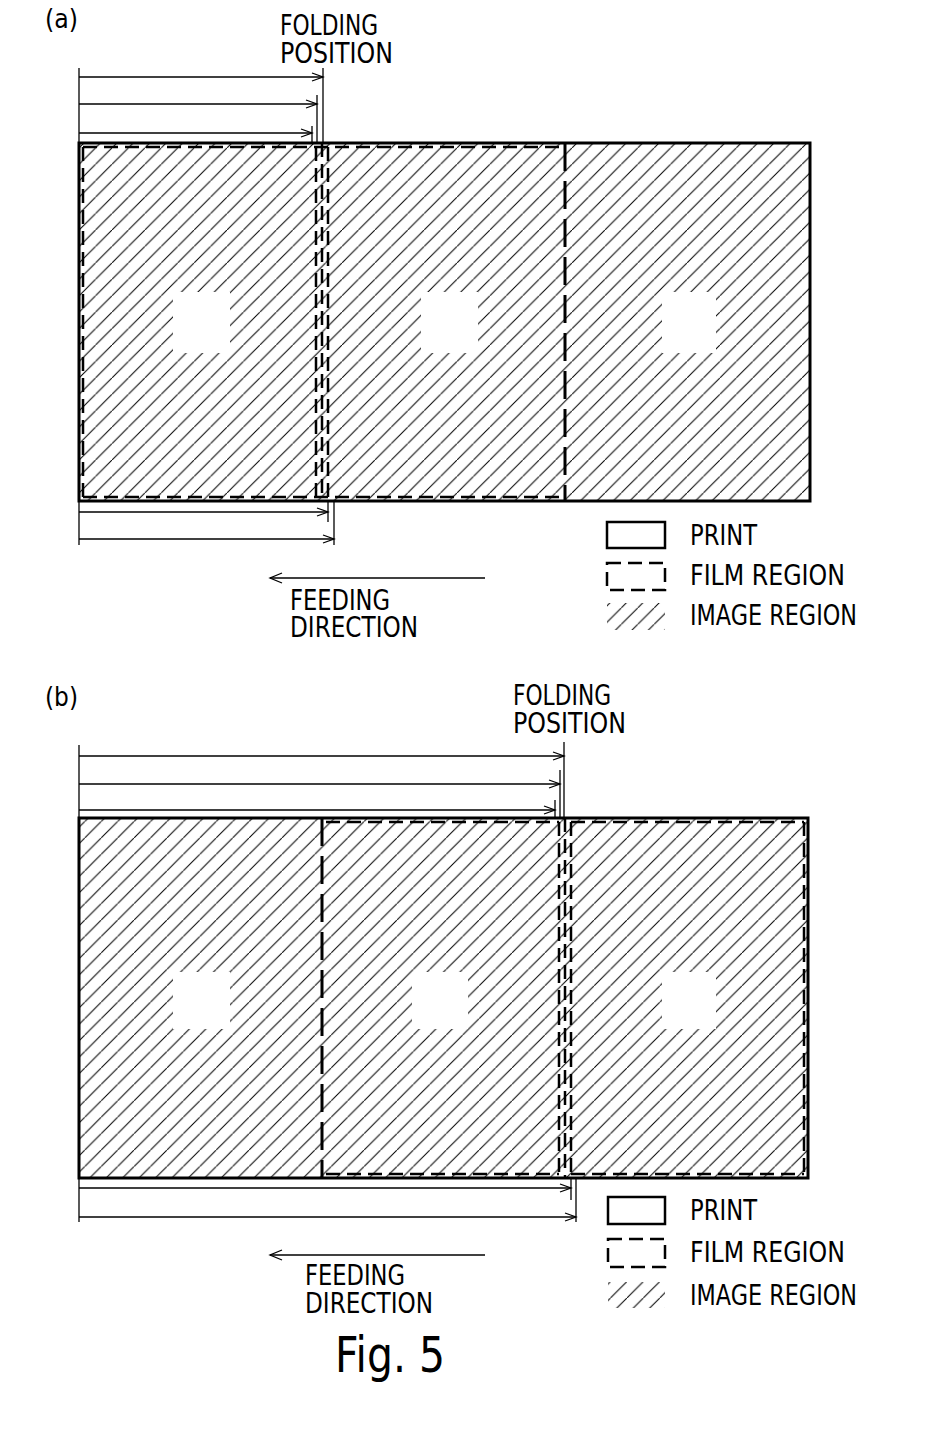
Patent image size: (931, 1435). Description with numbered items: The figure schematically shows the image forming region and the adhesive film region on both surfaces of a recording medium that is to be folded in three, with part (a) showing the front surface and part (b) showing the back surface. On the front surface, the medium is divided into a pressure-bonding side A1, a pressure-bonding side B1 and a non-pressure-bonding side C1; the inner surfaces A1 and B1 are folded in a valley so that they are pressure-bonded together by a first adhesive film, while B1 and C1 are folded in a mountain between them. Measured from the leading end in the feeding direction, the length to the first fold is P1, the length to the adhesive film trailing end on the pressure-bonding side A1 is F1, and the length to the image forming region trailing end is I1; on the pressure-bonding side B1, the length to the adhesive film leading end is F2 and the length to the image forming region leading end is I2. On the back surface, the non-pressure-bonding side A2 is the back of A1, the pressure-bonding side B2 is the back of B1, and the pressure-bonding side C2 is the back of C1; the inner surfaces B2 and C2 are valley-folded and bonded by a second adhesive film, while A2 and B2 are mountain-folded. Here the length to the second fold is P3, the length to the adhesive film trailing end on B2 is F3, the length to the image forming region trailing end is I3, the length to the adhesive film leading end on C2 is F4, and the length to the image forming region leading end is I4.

The pressure-bonding side A1 is at (200, 322).
The pressure-bonding side B1 is at (443, 322).
The non-pressure-bonding side C1 is at (687, 322).
The length to position of first fold P1 is at (201, 63).
The length to adhesive film trailing end on pressure-bonding side A1 F1 is at (198, 90).
The length to image forming region trailing end I1 is at (195, 119).
The length of adhesive film leading end on pressure-bonding side B1 F2 is at (203, 525).
The length to image forming region leading end I2 is at (206, 553).
The non-pressure-bonding side A2 is at (200, 998).
The pressure-bonding side B2 is at (443, 998).
The pressure-bonding side C2 is at (686, 998).
The length to position of second fold P3 is at (321, 742).
The length to adhesive film trailing end on pressure-bonding side B2 F3 is at (319, 770).
The length to image forming region trailing end I3 is at (317, 798).
The length to adhesive film leading end on pressure-bonding side C2 F4 is at (325, 1201).
The length to image forming region leading end I4 is at (327, 1230).